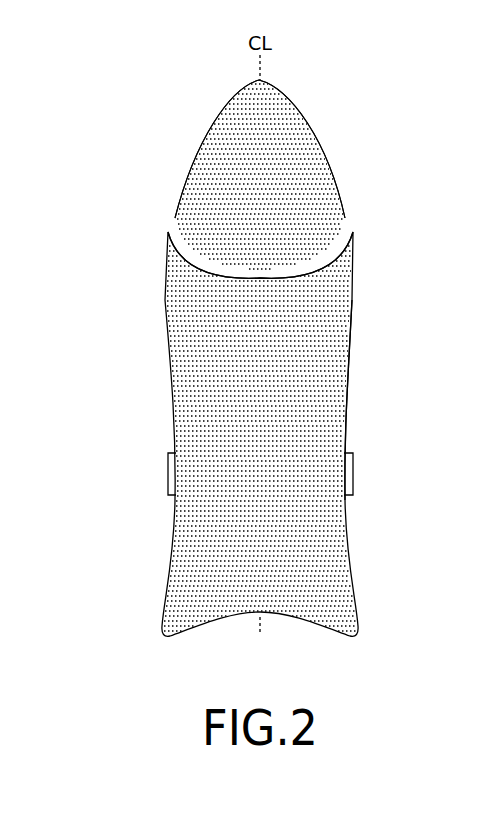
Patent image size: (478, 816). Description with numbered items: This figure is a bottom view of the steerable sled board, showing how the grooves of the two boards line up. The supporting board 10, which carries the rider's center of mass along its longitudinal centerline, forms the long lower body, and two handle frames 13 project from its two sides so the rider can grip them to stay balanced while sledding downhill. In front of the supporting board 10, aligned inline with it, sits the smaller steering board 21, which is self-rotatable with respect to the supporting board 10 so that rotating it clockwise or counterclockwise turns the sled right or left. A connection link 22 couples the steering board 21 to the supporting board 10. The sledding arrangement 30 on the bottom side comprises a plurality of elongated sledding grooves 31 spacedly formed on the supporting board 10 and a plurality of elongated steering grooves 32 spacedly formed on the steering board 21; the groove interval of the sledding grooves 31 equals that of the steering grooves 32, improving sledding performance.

The supporting board 10 is at (190, 346).
The handle frames 13 is at (168, 470).
The steering board 21 is at (205, 166).
The connection link 22 is at (355, 243).
The sledding arrangement 30 is at (364, 166).
The sledding grooves 31 is at (333, 332).
The steering grooves 32 is at (322, 152).